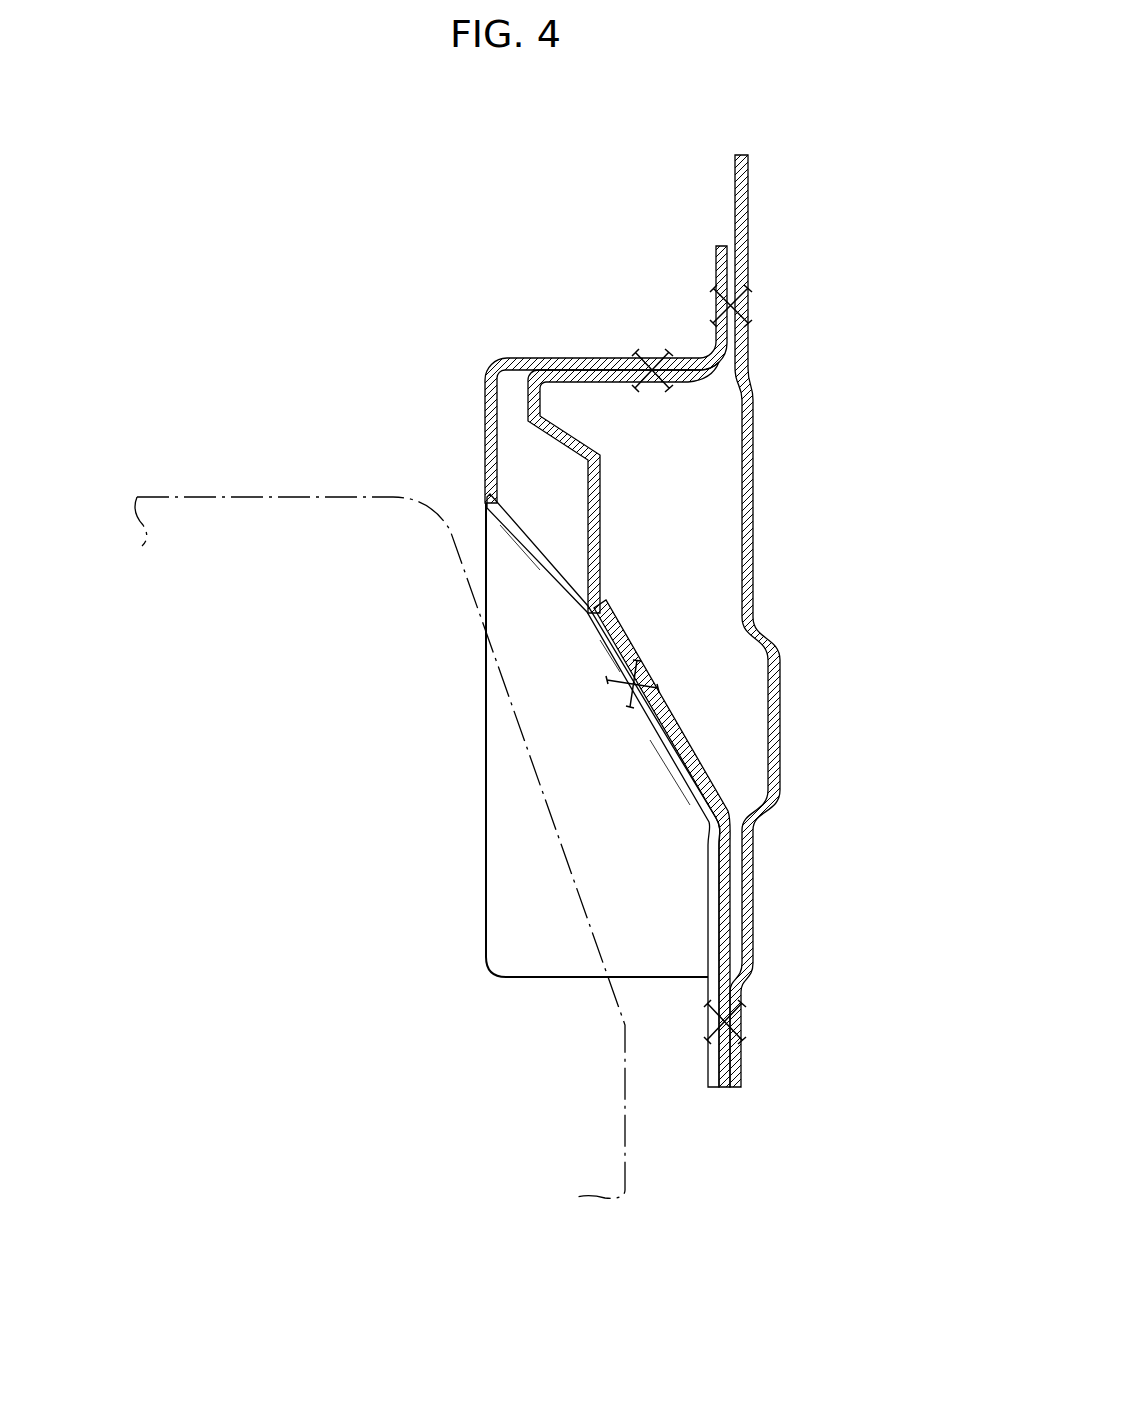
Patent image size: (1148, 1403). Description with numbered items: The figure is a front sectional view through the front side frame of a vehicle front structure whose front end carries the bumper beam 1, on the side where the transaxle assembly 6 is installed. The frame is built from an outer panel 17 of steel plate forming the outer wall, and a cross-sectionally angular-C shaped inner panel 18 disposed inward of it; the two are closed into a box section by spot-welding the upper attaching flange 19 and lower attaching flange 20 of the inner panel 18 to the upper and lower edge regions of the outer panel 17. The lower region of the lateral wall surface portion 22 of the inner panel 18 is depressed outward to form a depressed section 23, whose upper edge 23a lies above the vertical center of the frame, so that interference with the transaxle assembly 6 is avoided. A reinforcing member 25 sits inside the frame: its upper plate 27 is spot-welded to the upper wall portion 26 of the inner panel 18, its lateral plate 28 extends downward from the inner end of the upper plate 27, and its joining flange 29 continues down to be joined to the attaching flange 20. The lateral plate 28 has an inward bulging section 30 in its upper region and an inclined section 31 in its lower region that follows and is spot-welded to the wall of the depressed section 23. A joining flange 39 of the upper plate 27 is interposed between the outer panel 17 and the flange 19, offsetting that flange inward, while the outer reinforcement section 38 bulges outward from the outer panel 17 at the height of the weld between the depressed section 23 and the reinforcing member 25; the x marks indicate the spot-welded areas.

The bumper beam 1 is at (455, 358).
The transaxle assembly 6 is at (178, 497).
The outer panel 17 is at (760, 588).
The inner panel 18 is at (518, 347).
The attaching flange 19 is at (716, 270).
The attaching flange 20 is at (708, 1067).
The lateral wall surface portion 22 is at (643, 727).
The depressed section 23 is at (525, 675).
The upper edge 23a is at (485, 507).
The reinforcing member 25 is at (606, 485).
The upper wall portion 26 is at (618, 357).
The upper plate 27 is at (683, 386).
The lateral plate 28 is at (602, 530).
The joining flange 29 is at (718, 935).
The bulging section 30 is at (530, 412).
The inclined section 31 is at (680, 750).
The outer reinforcement section 38 is at (780, 688).
The joining flange 39 is at (740, 258).